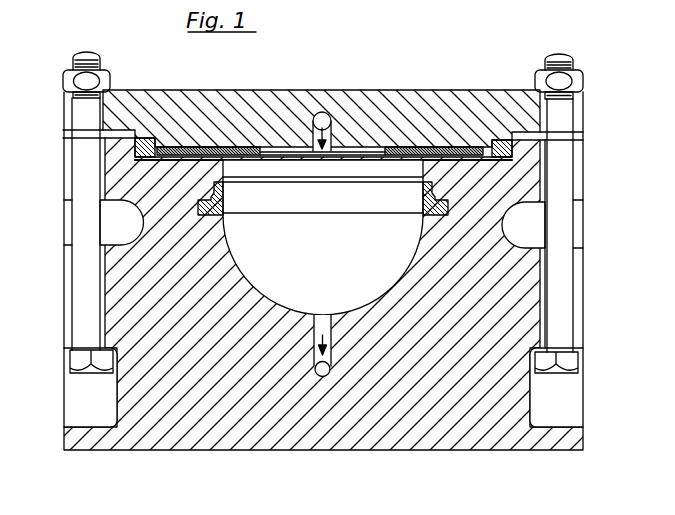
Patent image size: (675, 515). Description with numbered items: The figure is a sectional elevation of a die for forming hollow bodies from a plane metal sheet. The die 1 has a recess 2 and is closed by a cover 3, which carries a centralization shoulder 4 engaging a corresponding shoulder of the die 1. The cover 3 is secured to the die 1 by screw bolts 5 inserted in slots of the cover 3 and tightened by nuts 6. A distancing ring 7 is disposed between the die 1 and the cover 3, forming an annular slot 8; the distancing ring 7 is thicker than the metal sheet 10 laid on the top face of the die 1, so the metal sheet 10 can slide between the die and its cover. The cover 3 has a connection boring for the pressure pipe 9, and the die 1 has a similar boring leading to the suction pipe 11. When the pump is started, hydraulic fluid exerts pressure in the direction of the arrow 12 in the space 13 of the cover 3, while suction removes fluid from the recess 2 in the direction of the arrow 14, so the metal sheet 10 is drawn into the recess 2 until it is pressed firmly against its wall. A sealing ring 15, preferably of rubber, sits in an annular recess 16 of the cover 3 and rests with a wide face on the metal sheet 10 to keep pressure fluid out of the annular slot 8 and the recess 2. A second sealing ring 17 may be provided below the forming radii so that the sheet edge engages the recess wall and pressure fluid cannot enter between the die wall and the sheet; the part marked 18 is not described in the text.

The die 1 is at (483, 293).
The recess 2 is at (332, 233).
The cover 3 is at (390, 118).
The centralization shoulder 4 is at (503, 140).
The screw bolts 5 is at (558, 158).
The nuts 6 is at (557, 82).
The distancing ring 7 is at (513, 152).
The annular slot 8 is at (483, 148).
The pressure pipe 9 is at (322, 112).
The metal sheet 10 is at (353, 152).
The suction pipe 11 is at (322, 377).
The arrow 12 is at (310, 128).
The space 13 is at (280, 152).
The arrow 14 is at (318, 350).
The sealing ring 15 is at (200, 147).
The annular recess 16 is at (172, 147).
The second sealing ring 17 is at (197, 210).
The support step 18 is at (145, 160).